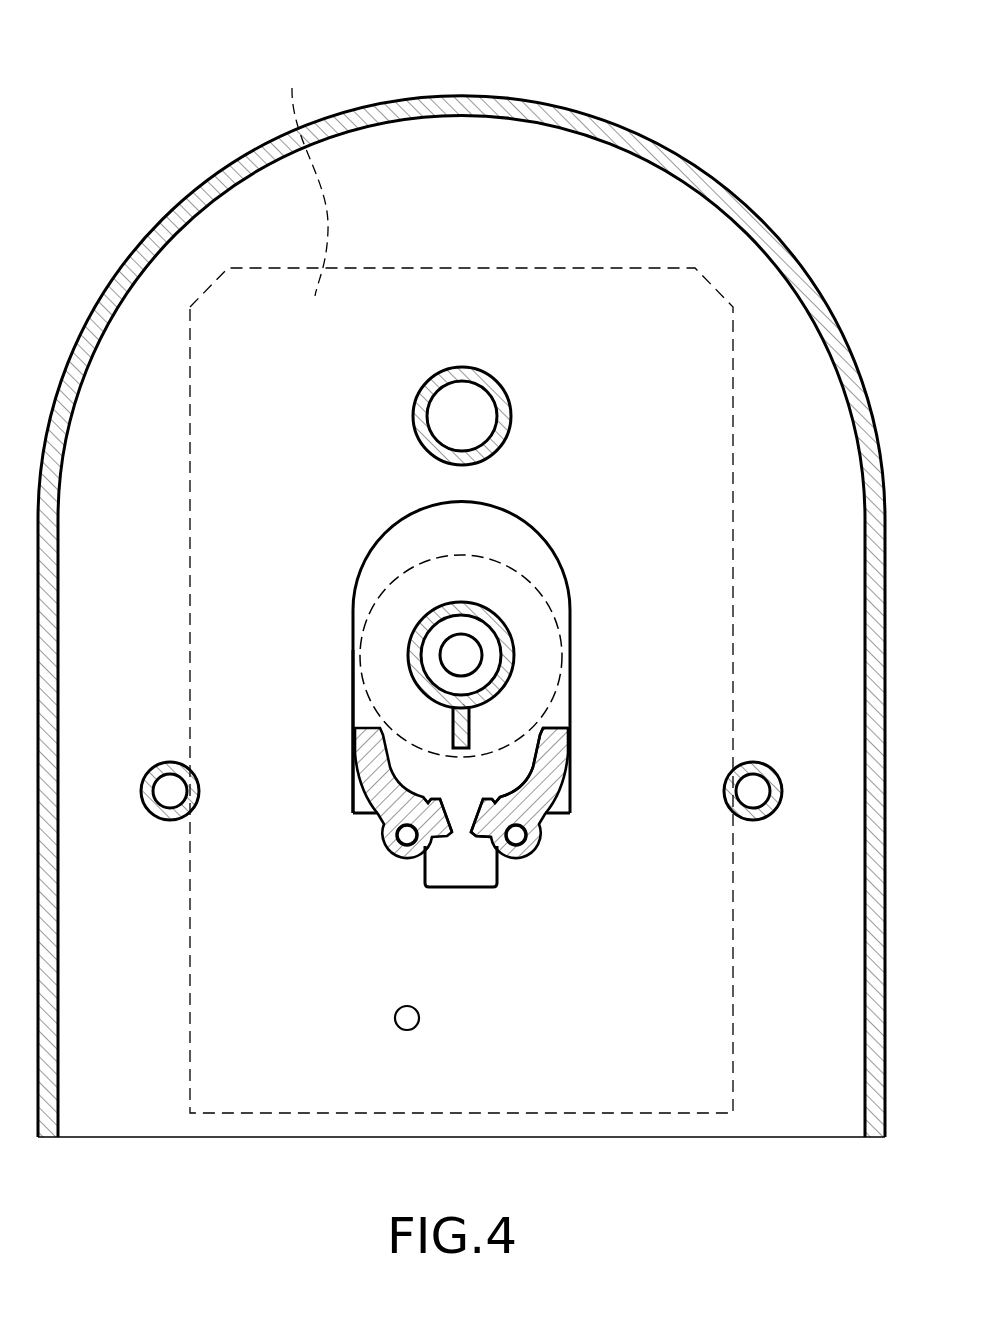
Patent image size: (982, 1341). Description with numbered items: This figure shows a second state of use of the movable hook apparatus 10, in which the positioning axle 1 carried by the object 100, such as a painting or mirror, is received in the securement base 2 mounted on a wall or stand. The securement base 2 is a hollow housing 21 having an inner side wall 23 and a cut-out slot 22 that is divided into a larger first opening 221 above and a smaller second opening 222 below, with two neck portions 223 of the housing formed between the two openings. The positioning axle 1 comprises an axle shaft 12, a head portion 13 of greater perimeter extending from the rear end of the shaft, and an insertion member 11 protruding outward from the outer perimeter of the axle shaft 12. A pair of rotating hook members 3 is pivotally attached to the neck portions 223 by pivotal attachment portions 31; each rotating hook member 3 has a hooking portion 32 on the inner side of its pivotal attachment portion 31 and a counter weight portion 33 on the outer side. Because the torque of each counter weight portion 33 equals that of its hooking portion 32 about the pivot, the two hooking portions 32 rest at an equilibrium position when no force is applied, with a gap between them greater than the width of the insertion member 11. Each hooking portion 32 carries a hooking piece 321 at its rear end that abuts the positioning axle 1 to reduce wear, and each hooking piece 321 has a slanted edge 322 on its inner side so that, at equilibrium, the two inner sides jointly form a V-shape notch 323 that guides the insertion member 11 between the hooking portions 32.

The movable hook apparatus 10 is at (207, 37).
The object 100 is at (302, 177).
The securement base 2 is at (632, 129).
The hollow housing 21 is at (680, 173).
The cut-out slot 22 is at (394, 532).
The first opening 221 is at (358, 715).
The second opening 222 is at (437, 864).
The neck portion 223 is at (377, 826).
The inner side wall 23 is at (800, 1107).
The positioning axle 1 is at (522, 614).
The insertion member 11 is at (457, 727).
The axle shaft 12 is at (507, 645).
The head portion 13 is at (388, 610).
The rotating hook member 3 is at (461, 849).
The pivotal attachment portion 31 is at (523, 852).
The hooking portion 32 is at (482, 830).
The hooking piece 321 is at (490, 806).
The slanted edge 322 is at (482, 802).
The V-shape notch 323 is at (449, 806).
The counter weight portion 33 is at (550, 758).